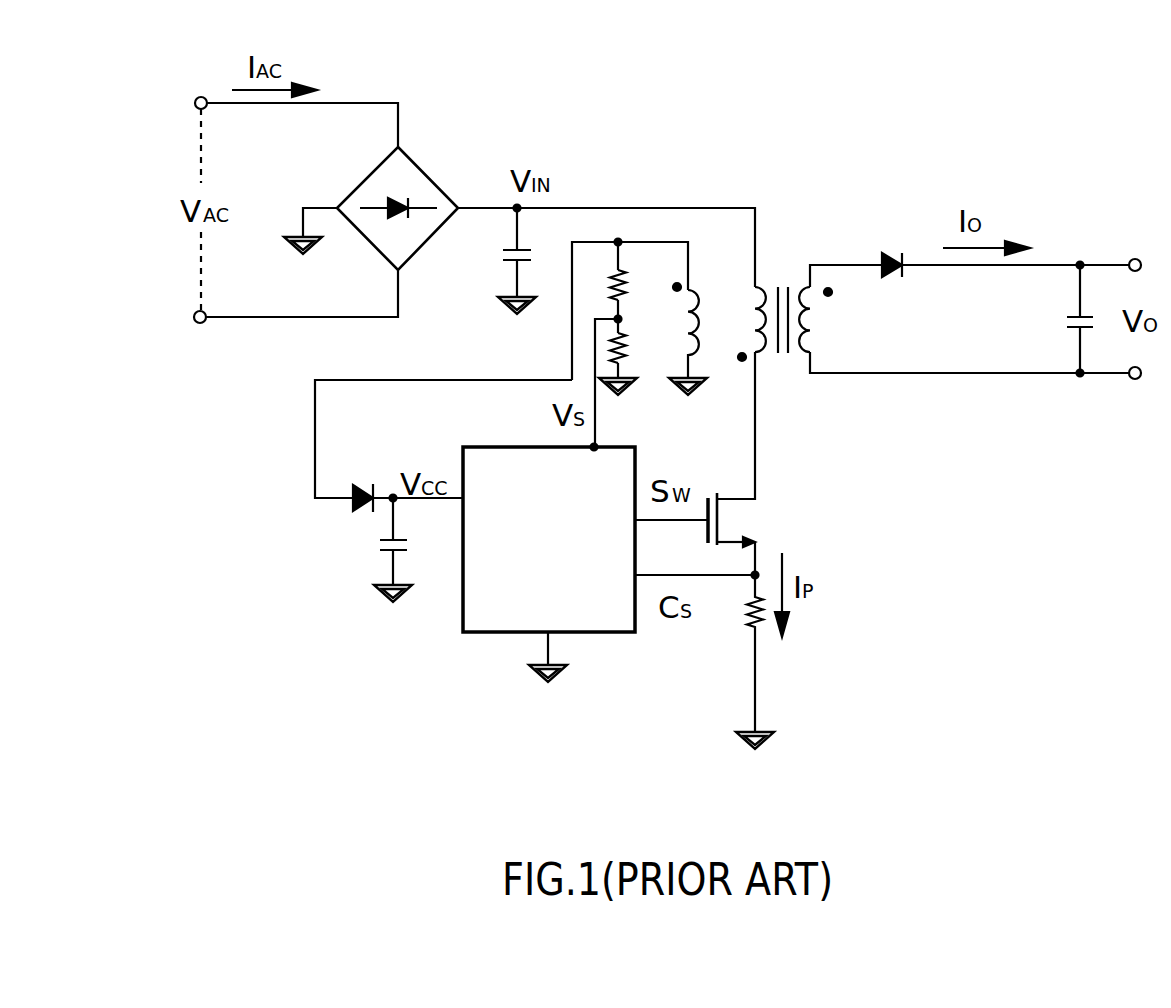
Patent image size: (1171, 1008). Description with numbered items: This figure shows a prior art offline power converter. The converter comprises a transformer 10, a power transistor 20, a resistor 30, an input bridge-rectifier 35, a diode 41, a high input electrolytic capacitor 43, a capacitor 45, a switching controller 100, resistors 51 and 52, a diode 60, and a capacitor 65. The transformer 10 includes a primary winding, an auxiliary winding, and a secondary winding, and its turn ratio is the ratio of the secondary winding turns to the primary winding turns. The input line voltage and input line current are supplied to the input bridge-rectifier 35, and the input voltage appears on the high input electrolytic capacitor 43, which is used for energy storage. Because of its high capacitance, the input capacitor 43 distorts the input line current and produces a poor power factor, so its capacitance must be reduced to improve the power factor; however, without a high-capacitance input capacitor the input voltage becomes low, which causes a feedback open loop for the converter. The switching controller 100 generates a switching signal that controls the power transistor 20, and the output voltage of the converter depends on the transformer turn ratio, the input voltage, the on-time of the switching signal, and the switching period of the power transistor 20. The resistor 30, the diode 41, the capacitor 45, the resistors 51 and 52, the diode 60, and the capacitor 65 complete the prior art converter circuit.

The transformer 10 is at (785, 272).
The power transistor 20 is at (770, 488).
The resistor 30 is at (740, 662).
The input bridge-rectifier 35 is at (372, 198).
The diode 41 is at (354, 475).
The high input electrolytic capacitor 43 is at (497, 261).
The capacitor 45 is at (373, 550).
The resistor 51 is at (638, 277).
The resistor 52 is at (639, 359).
The diode 60 is at (885, 244).
The capacitor 65 is at (1059, 319).
The switching controller 100 is at (602, 632).